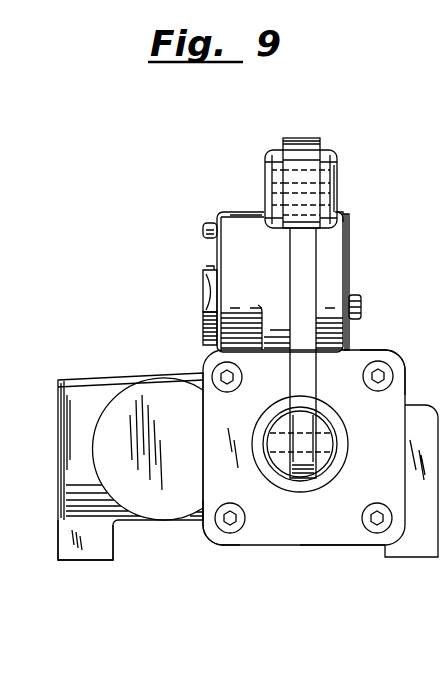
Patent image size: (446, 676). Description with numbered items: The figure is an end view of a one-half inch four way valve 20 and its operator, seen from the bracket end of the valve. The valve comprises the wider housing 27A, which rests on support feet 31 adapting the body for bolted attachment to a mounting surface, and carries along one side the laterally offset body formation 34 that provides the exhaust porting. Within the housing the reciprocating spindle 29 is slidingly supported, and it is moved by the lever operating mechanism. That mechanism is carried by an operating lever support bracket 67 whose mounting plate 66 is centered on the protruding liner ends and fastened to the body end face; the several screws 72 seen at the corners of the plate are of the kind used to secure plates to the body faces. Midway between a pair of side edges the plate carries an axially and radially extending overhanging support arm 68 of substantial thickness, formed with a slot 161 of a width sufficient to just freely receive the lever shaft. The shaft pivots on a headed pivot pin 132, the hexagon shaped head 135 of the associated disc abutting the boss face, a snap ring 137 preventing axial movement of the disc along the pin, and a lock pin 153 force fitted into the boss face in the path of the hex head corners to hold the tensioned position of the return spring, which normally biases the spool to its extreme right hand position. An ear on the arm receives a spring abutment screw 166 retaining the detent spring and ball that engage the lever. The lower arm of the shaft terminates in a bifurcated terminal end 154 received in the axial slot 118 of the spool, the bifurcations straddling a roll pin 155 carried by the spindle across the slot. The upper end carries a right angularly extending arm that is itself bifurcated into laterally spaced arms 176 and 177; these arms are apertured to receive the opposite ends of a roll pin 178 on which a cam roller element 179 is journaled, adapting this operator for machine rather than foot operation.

The valve 20 is at (262, 551).
The housing 27A is at (70, 378).
The spindle 29 is at (331, 421).
The support feet 31 is at (90, 562).
The body formation 34 is at (163, 378).
The mounting plate 66 is at (318, 550).
The operating lever support bracket 67 is at (249, 208).
The support arm 68 is at (346, 222).
The screws 72 is at (228, 386).
The axial slot 118 is at (296, 480).
The pivot pin 132 is at (362, 301).
The hexagon shaped head 135 is at (203, 296).
The snap ring 137 is at (355, 290).
The lock pin 153 is at (207, 268).
The bifurcated terminal end 154 is at (306, 481).
The roll pin 155 is at (339, 446).
The slot 161 is at (312, 256).
The spring abutment screw 166 is at (204, 230).
The arm 176 is at (270, 151).
The arm 177 is at (335, 152).
The roll pin 178 is at (338, 174).
The cam roller element 179 is at (305, 140).